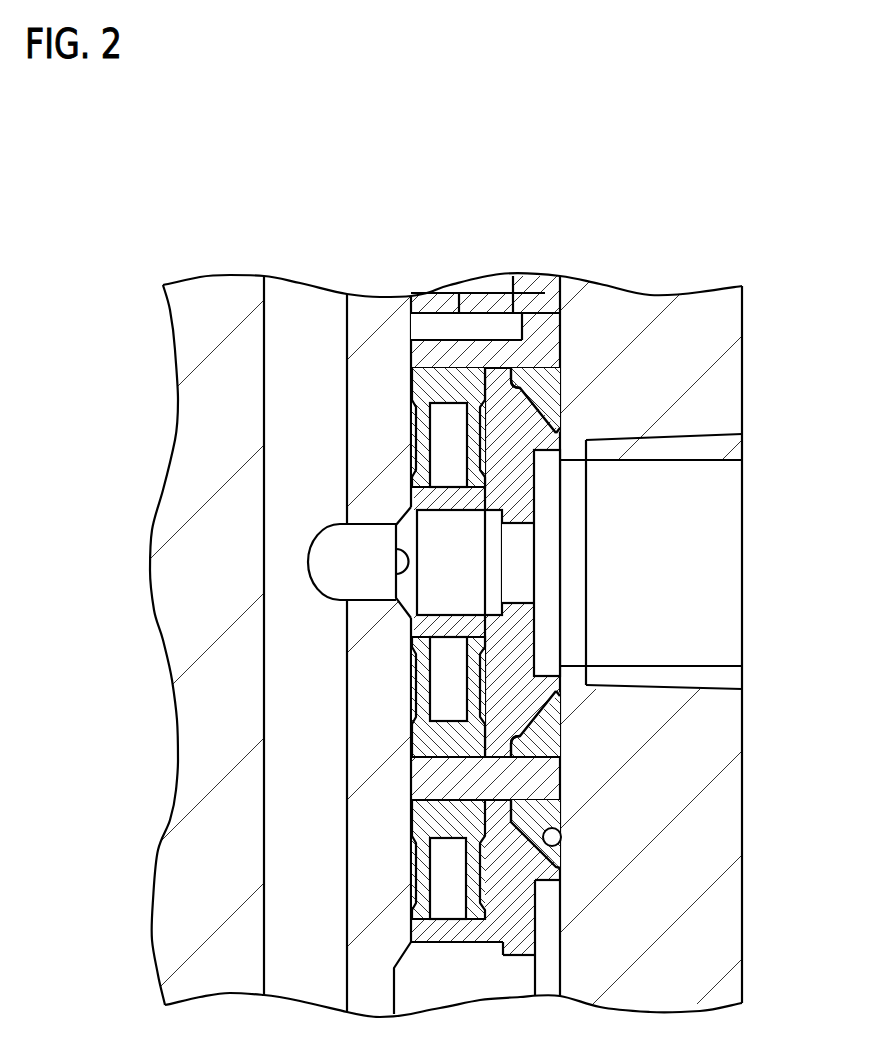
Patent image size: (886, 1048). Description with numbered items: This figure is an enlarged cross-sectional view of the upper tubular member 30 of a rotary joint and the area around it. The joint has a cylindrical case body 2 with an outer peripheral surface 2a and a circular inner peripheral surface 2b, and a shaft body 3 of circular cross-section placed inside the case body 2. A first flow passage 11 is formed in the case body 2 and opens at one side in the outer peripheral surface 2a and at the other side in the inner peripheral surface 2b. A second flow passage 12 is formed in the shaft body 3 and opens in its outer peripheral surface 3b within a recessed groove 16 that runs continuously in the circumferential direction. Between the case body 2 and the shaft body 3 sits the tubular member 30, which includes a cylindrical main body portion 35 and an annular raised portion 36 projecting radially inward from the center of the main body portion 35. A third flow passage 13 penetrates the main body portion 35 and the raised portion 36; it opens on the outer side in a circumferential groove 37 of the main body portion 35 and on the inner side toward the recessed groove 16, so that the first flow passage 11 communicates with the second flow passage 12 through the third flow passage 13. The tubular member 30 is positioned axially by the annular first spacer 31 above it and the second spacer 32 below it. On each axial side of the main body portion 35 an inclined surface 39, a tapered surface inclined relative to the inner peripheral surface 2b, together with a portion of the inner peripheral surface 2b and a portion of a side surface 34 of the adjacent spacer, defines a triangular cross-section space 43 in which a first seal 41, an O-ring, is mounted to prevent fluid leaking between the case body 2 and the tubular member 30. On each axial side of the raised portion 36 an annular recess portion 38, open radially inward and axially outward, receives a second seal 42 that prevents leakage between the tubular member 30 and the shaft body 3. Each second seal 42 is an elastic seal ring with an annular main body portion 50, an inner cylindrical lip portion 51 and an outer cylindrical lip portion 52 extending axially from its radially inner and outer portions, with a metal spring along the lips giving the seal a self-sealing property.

The case body 2 is at (703, 927).
The outer peripheral surface 2a is at (742, 832).
The inner peripheral surface 2b is at (562, 847).
The shaft body 3 is at (377, 868).
The outer peripheral surface 3b is at (412, 786).
The first flow passage 11 is at (653, 667).
The second flow passage 12 is at (265, 622).
The third flow passage 13 is at (317, 533).
The recessed groove 16 is at (380, 571).
The tubular member 30 is at (546, 478).
The first spacer 31 is at (533, 346).
The second spacer 32 is at (537, 780).
The side surface 34 is at (513, 387).
The main body portion 35 is at (517, 633).
The raised portion 36 is at (445, 497).
The groove 37 is at (537, 612).
The recess portion 38 is at (467, 423).
The inclined surface 39 is at (530, 407).
The first seal 41 is at (545, 383).
The second seal 42 is at (443, 388).
The triangular cross-section space 43 is at (572, 414).
The main body portion 50 is at (406, 398).
The inner cylindrical lip portion 51 is at (423, 445).
The outer cylindrical lip portion 52 is at (470, 448).